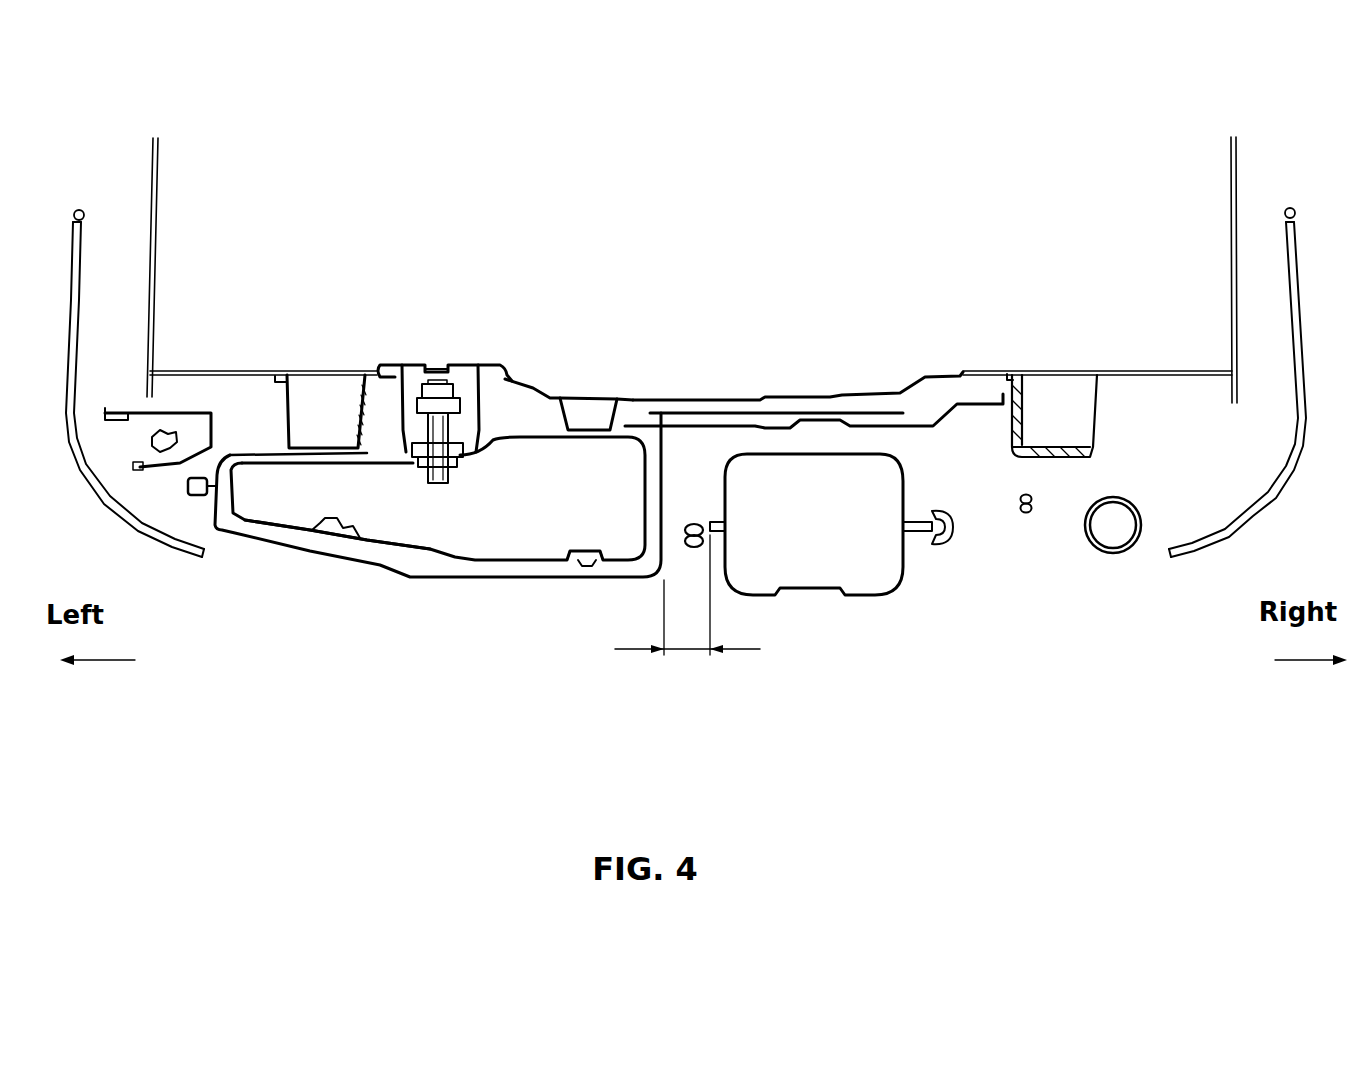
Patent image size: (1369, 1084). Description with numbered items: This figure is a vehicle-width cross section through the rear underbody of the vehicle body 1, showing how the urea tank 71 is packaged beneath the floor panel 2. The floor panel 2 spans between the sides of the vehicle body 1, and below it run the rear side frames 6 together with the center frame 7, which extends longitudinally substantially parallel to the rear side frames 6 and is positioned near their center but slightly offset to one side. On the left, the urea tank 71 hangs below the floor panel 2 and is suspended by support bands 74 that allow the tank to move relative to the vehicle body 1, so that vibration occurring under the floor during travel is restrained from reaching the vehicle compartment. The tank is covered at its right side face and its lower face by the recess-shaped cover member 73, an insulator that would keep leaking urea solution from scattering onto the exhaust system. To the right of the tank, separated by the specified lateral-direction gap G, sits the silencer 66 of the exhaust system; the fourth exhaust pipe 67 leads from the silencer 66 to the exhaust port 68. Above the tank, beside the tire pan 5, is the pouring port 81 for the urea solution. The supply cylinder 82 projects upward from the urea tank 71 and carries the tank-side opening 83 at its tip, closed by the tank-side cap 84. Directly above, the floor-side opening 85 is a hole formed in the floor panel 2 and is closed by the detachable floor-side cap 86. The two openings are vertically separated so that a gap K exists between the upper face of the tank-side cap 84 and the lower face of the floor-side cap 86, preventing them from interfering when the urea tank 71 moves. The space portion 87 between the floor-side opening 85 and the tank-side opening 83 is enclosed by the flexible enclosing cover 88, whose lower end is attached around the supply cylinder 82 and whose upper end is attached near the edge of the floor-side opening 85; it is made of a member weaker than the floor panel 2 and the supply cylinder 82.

The vehicle body 1 is at (1292, 480).
The floor panel 2 is at (981, 362).
The tire pan 5 is at (847, 393).
The rear side frames 6 is at (280, 407).
The center frame 7 is at (623, 420).
The silencer 66 is at (828, 598).
The fourth exhaust pipe 67 is at (1122, 556).
The exhaust port 68 is at (1100, 538).
The urea tank 71 is at (440, 560).
The cover member 73 is at (412, 580).
The support bands 74 is at (352, 540).
The pouring port 81 is at (433, 352).
The supply cylinder 82 is at (483, 440).
The tank-side opening 83 is at (445, 487).
The tank-side cap 84 is at (412, 366).
The floor-side opening 85 is at (480, 358).
The floor-side cap 86 is at (455, 360).
The space portion 87 is at (533, 387).
The enclosing cover 88 is at (393, 570).
The gap K is at (458, 372).
The lateral-direction gap G is at (687, 609).